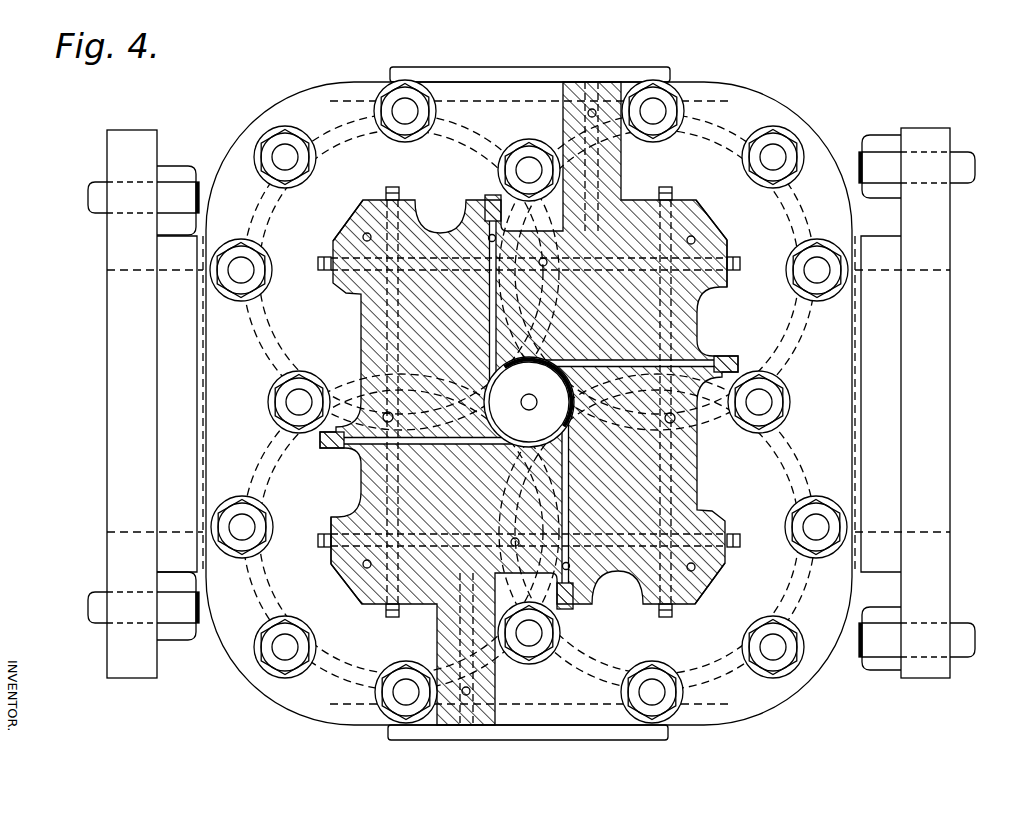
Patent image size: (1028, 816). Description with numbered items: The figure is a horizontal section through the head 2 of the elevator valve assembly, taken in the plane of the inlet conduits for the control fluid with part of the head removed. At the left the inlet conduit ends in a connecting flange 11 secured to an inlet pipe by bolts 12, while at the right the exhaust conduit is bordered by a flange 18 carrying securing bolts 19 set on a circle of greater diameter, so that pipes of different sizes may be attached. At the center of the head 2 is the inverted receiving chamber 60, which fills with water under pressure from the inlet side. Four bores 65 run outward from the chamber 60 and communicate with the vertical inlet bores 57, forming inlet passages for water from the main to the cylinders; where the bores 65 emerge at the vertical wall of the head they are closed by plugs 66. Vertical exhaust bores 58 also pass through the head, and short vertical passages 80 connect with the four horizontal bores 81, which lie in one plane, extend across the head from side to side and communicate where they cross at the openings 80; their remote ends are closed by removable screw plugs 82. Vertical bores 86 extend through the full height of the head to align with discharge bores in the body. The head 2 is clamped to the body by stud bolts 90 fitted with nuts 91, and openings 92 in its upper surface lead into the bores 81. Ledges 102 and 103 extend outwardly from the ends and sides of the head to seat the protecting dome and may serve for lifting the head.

The head 2 is at (350, 326).
The connecting flange 11 is at (122, 130).
The bolts 12 is at (93, 182).
The flange 18 is at (937, 215).
The securing bolts 19 is at (957, 157).
The inlet bore 57 is at (489, 234).
The exhaust bore 58 is at (366, 233).
The receiving chamber 60 is at (515, 440).
The bores 65 is at (506, 370).
The plugs 66 is at (487, 198).
The vertical passage 80 is at (703, 208).
The horizontal bores 81 is at (729, 236).
The removable screw plugs 82 is at (670, 190).
The vertical bores 86 is at (595, 110).
The stud bolts 90 is at (518, 401).
The nuts 91 is at (776, 148).
The openings 92 is at (386, 414).
The ledges 102 is at (860, 390).
The ledges 103 is at (547, 740).